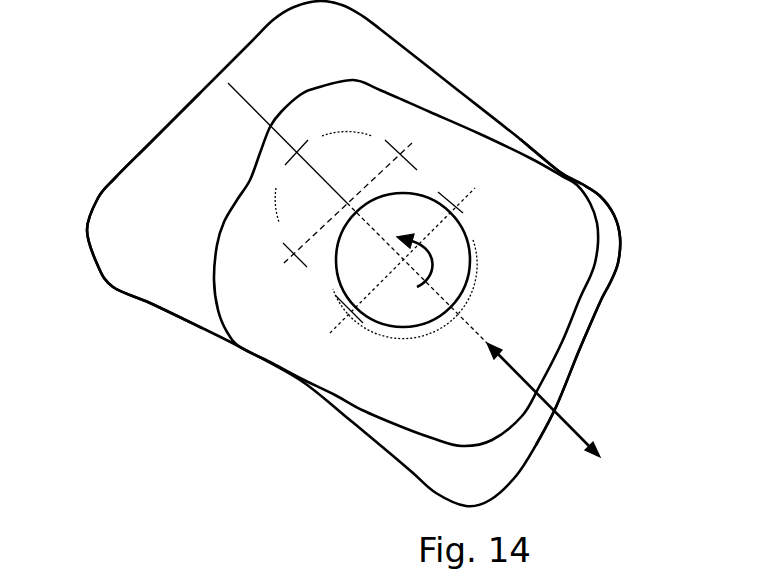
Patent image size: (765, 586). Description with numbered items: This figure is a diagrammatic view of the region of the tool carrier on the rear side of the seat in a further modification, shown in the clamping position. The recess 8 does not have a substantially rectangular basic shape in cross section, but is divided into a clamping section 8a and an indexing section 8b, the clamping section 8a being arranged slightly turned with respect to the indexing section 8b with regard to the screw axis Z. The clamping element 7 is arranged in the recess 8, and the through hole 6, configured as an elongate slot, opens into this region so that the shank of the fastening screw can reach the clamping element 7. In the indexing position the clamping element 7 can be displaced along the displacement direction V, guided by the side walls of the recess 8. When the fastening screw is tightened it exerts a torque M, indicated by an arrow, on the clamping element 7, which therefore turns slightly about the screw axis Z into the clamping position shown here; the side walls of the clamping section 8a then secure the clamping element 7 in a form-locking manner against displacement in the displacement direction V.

The recess 8 is at (380, 62).
The clamping section 8a is at (578, 328).
The indexing section 8b is at (148, 252).
The clamping element 7 is at (257, 328).
The through hole 6 is at (410, 155).
The torque M is at (427, 252).
The screw axis Z is at (403, 262).
The displacement direction V is at (570, 421).